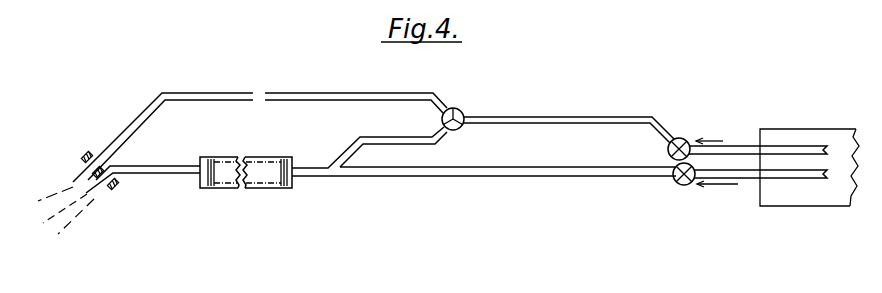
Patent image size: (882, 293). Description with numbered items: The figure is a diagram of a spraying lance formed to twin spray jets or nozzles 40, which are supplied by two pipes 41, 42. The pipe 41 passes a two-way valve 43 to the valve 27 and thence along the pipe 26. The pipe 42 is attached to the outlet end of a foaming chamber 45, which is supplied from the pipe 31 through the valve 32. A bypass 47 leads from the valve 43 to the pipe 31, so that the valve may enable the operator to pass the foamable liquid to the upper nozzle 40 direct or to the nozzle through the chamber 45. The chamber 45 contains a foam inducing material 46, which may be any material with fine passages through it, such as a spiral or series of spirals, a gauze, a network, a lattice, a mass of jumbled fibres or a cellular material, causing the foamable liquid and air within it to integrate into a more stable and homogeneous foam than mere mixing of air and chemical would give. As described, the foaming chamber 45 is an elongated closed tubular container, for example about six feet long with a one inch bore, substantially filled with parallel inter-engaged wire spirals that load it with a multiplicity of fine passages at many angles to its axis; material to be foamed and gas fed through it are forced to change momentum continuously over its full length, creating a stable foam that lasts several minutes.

The pipe 26 is at (723, 146).
The valve 27 is at (681, 137).
The pipe 31 is at (452, 177).
The valve 32 is at (683, 186).
The spray jets or nozzles 40 is at (88, 154).
The pipe 41 is at (188, 92).
The pipe 42 is at (165, 164).
The two-way valve 43 is at (459, 107).
The foaming chamber 45 is at (278, 157).
The foam inducing material 46 is at (291, 159).
The bypass 47 is at (398, 134).